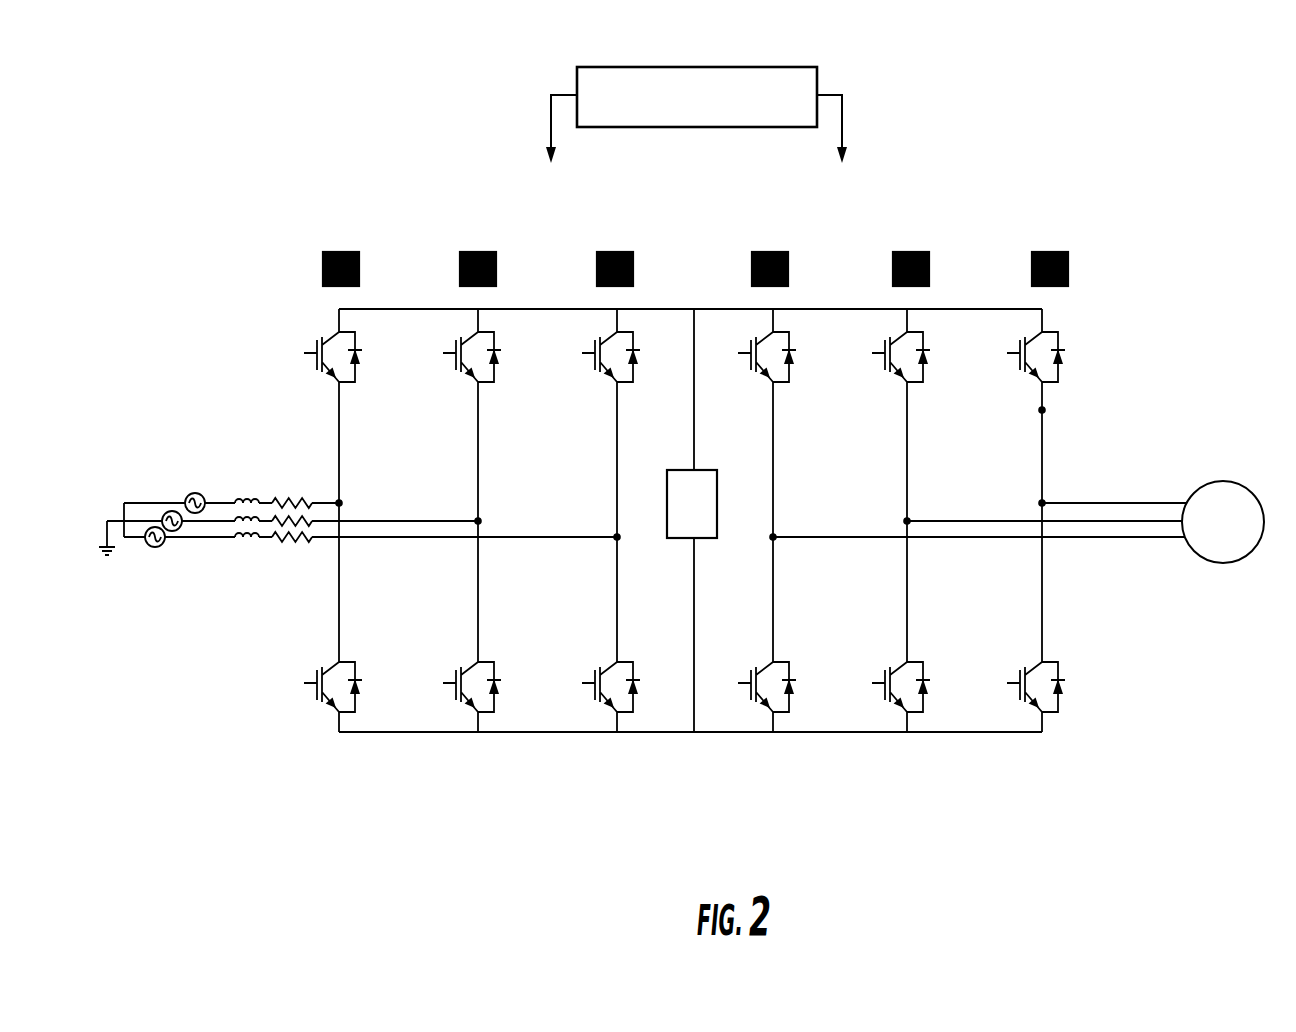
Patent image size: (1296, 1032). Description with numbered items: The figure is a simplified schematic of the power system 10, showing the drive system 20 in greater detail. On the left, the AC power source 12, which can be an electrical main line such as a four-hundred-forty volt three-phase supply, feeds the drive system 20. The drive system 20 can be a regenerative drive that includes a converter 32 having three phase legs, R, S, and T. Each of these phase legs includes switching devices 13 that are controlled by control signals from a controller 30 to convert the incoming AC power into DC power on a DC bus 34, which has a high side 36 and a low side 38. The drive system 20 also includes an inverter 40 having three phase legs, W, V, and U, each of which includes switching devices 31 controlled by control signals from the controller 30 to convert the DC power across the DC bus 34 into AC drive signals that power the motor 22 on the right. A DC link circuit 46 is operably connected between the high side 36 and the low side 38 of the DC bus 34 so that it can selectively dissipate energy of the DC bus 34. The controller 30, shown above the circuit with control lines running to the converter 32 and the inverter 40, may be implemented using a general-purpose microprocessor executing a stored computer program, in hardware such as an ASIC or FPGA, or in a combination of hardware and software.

The power system 10 is at (1133, 217).
The AC power source 12 is at (195, 493).
The switching devices 13 is at (315, 661).
The drive system 20 is at (875, 215).
The motor 22 is at (1222, 481).
The controller 30 is at (770, 67).
The switching devices 31 is at (1074, 658).
The converter 32 is at (483, 792).
The DC bus 34 is at (388, 309).
The high side 36 is at (694, 309).
The low side 38 is at (655, 733).
The inverter 40 is at (974, 790).
The DC link circuit 46 is at (692, 504).